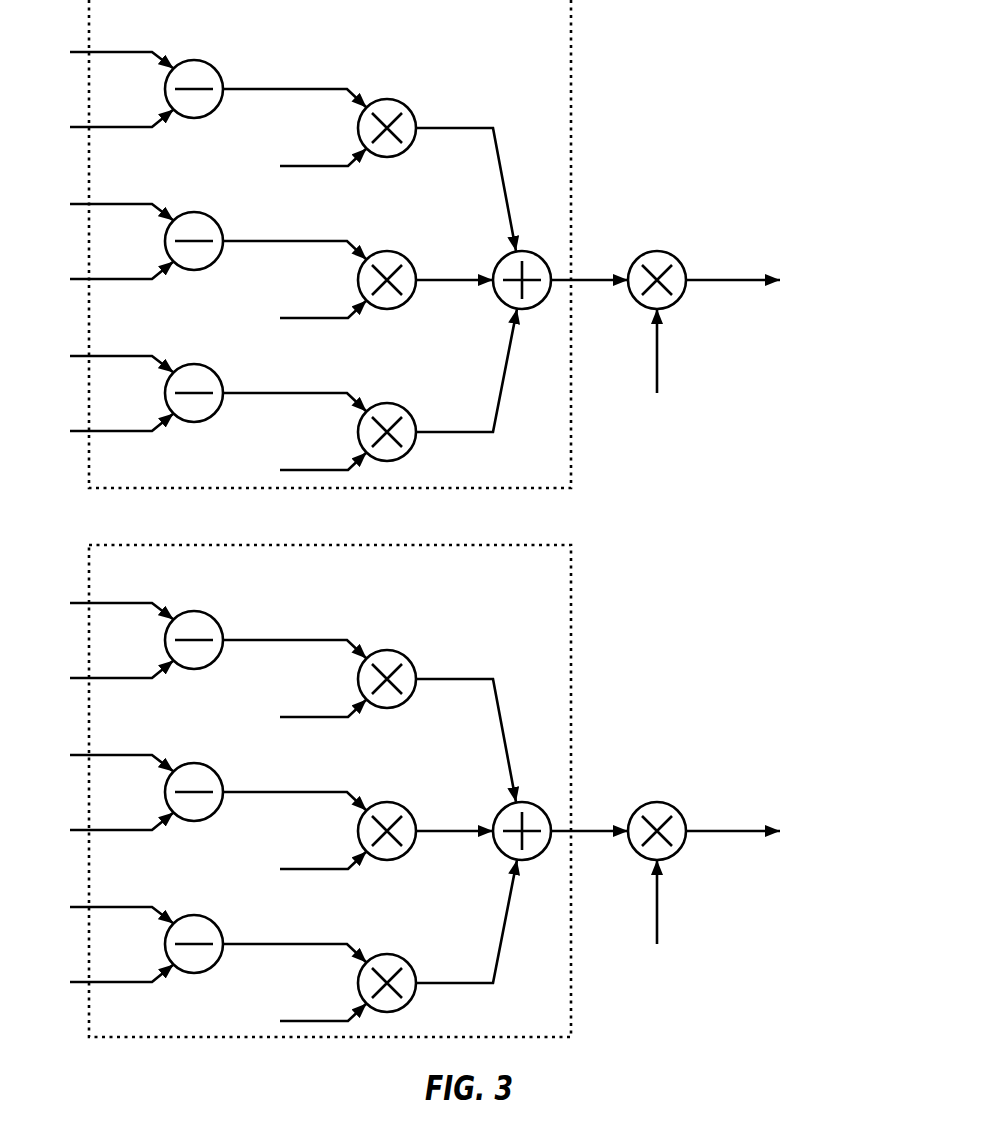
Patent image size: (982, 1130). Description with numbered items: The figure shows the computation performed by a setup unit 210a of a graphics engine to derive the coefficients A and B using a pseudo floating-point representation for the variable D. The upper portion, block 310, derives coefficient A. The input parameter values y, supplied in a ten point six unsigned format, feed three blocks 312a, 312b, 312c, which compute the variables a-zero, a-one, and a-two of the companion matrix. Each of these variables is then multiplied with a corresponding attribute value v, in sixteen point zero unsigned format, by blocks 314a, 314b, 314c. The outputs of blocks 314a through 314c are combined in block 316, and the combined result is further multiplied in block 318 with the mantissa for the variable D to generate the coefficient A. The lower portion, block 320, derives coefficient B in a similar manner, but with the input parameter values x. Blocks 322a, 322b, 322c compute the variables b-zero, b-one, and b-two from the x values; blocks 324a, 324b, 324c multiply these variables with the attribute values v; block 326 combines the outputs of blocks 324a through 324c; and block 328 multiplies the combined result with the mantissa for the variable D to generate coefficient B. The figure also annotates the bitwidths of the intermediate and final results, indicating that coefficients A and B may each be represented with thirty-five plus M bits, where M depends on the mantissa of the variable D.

The setup unit 210a is at (766, 50).
The coefficient A computation block 310 is at (572, 50).
The block 312a is at (201, 46).
The block 312b is at (196, 222).
The block 312c is at (195, 374).
The block 314a is at (394, 85).
The block 314b is at (388, 261).
The block 314c is at (387, 413).
The block 316 is at (532, 249).
The block 318 is at (652, 250).
The coefficient B computation block 320 is at (572, 601).
The block 322a is at (196, 621).
The block 322b is at (196, 773).
The block 322c is at (195, 925).
The block 324a is at (388, 660).
The block 324b is at (388, 812).
The block 324c is at (387, 964).
The block 326 is at (532, 800).
The block 328 is at (652, 801).